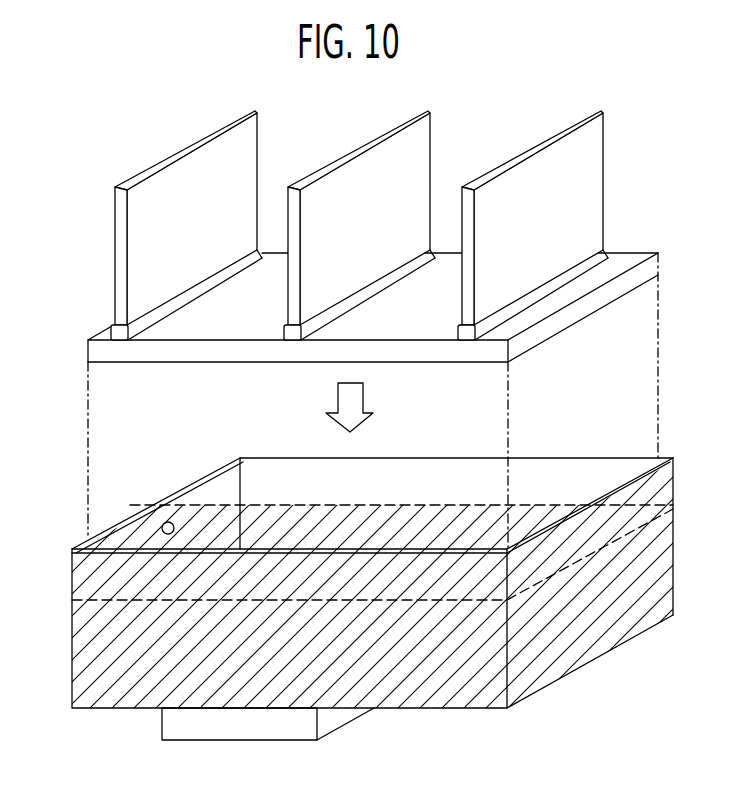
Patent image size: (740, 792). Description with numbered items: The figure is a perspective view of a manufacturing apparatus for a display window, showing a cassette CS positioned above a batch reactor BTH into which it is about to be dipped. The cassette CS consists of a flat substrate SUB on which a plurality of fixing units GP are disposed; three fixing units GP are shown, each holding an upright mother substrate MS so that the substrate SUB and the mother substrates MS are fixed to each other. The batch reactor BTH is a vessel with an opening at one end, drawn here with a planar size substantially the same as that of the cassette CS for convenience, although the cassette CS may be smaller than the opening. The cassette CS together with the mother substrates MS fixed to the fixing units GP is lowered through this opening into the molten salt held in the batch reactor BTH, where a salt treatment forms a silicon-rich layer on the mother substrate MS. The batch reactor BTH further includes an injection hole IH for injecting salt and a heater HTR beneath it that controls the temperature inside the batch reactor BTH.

The cassette CS is at (656, 88).
The mother substrate MS is at (115, 219).
The fixing unit GP is at (112, 331).
The substrate SUB is at (98, 351).
The batch reactor BTH is at (638, 418).
The injection hole IH is at (168, 521).
The heater HTR is at (160, 724).